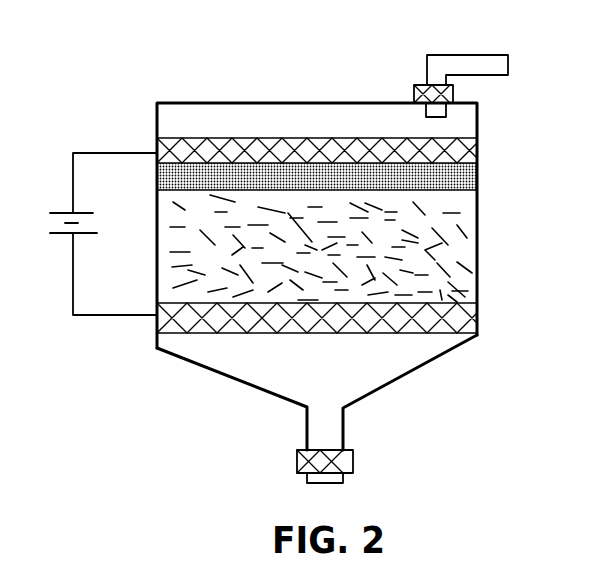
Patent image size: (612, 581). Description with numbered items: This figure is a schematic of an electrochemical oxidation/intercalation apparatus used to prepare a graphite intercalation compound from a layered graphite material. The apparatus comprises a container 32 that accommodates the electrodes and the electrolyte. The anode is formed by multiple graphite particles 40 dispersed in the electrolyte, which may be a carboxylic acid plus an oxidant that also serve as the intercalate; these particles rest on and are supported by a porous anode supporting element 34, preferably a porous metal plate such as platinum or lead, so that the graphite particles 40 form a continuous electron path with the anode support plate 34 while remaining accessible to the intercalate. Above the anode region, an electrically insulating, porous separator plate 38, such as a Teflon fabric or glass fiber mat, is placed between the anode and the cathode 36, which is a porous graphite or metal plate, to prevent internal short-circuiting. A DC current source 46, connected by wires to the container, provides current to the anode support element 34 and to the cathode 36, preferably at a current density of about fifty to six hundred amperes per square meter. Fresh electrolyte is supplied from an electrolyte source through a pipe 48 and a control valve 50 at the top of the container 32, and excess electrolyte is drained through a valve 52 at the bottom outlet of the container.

The container 32 is at (480, 263).
The porous anode supporting element 34 is at (452, 322).
The cathode 36 is at (470, 152).
The porous separator plate 38 is at (480, 178).
The graphite particles 40 is at (452, 291).
The DC current source 46 is at (84, 234).
The pipe 48 is at (483, 63).
The control valve 50 is at (414, 88).
The valve 52 is at (353, 463).